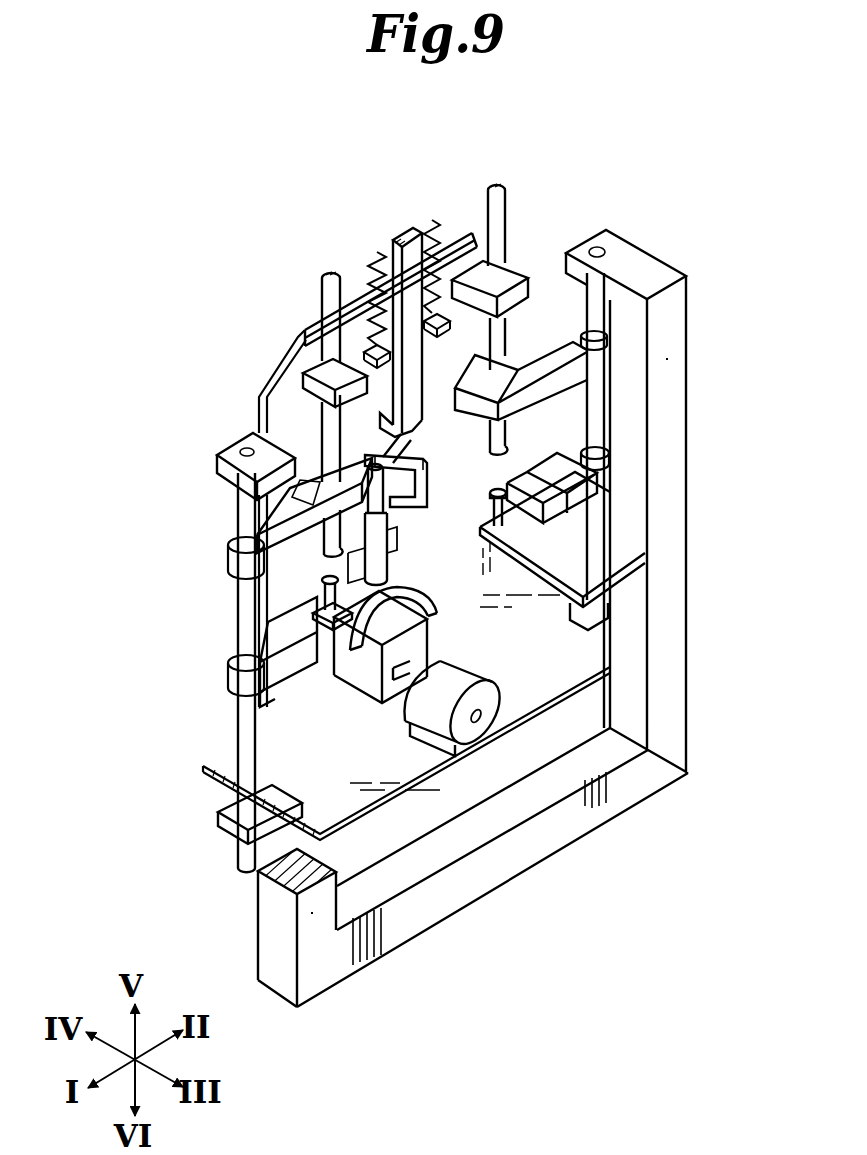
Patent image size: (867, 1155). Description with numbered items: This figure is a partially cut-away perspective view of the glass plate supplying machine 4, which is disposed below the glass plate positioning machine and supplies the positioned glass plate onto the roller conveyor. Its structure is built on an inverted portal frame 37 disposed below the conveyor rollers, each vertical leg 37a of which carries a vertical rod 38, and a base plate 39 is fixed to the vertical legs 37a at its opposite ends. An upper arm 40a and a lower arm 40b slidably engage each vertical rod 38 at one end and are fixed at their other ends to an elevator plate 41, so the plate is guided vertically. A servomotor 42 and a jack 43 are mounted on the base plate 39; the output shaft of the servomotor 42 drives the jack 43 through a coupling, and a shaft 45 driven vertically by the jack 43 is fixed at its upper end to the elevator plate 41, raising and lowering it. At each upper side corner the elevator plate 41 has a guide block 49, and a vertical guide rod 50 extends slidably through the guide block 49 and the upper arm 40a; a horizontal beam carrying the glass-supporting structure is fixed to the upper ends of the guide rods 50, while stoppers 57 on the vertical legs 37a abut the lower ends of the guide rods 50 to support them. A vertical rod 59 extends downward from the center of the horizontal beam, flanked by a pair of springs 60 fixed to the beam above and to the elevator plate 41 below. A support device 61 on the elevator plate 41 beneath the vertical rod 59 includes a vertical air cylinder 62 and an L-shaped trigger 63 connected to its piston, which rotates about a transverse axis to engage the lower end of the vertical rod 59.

The glass plate supplying machine 4 is at (628, 222).
The inverted portal frame 37 is at (697, 320).
The vertical leg 37a is at (667, 358).
The vertical rod 38 is at (597, 310).
The base plate 39 is at (430, 790).
The upper arm 40a is at (550, 367).
The lower arm 40b is at (600, 495).
The elevator plate 41 is at (257, 415).
The servomotor 42 is at (455, 690).
The jack 43 is at (365, 678).
The shaft 45 is at (382, 610).
The guide block 49 is at (527, 287).
The vertical guide rod 50 is at (498, 208).
The stopper 57 is at (590, 525).
The vertical rod 59 is at (410, 262).
The spring 60 is at (435, 225).
The support device 61 is at (414, 525).
The vertical air cylinder 62 is at (380, 542).
The L-shaped trigger 63 is at (405, 449).